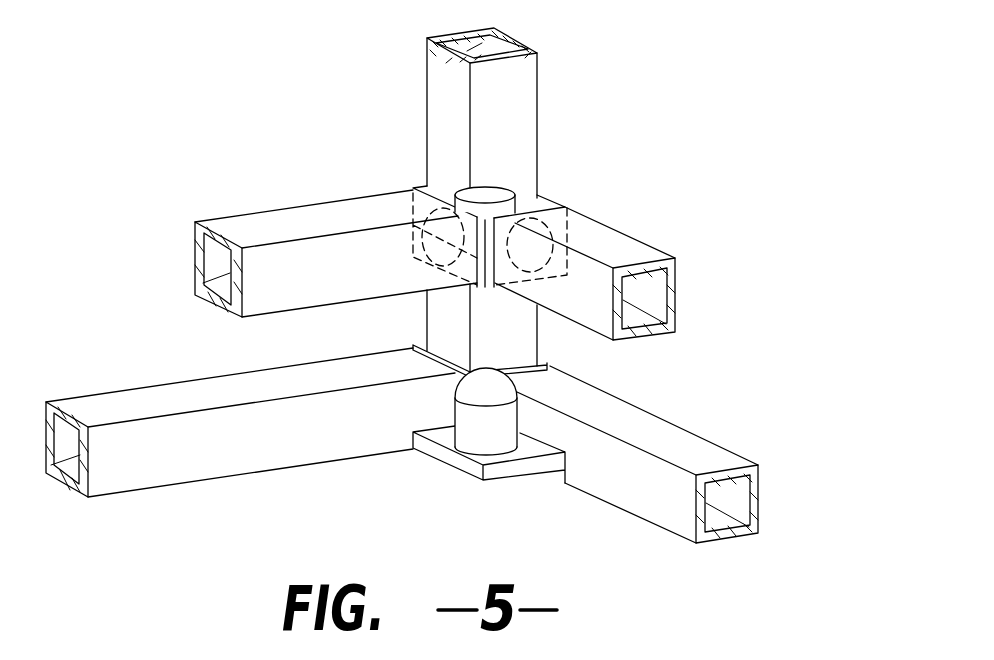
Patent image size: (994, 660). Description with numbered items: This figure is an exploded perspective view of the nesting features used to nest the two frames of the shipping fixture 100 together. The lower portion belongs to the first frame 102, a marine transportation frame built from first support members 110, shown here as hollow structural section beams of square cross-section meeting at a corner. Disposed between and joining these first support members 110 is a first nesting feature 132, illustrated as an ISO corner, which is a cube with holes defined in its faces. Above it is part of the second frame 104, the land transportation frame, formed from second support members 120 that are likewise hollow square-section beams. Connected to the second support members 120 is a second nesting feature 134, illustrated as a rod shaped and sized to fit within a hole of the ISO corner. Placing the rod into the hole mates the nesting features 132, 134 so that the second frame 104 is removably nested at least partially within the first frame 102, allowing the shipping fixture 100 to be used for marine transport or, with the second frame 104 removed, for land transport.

The shipping fixture 100 is at (177, 124).
The first frame 102 is at (128, 379).
The second frame 104 is at (353, 187).
The first support member 110 is at (522, 102).
The second support member 120 is at (278, 225).
The first nesting feature 132 is at (472, 428).
The second nesting feature 134 is at (538, 202).